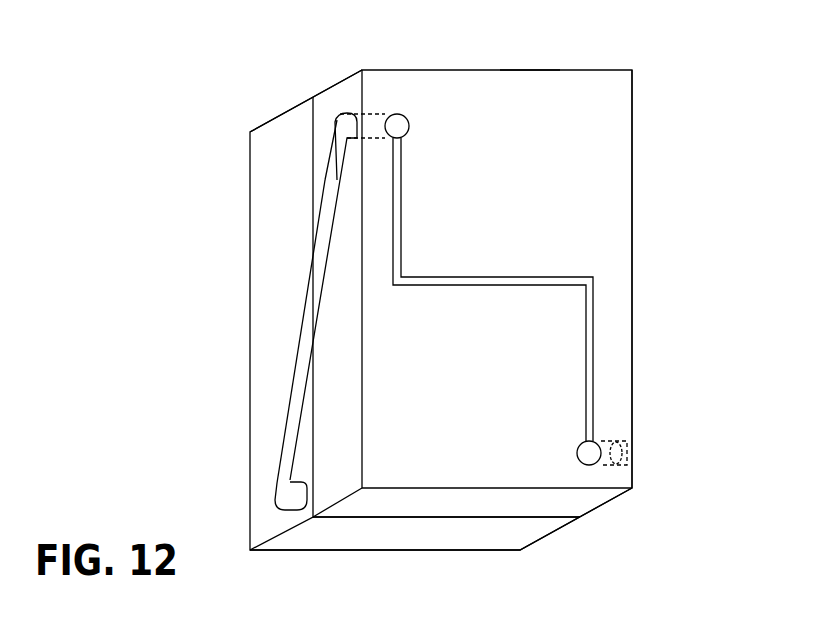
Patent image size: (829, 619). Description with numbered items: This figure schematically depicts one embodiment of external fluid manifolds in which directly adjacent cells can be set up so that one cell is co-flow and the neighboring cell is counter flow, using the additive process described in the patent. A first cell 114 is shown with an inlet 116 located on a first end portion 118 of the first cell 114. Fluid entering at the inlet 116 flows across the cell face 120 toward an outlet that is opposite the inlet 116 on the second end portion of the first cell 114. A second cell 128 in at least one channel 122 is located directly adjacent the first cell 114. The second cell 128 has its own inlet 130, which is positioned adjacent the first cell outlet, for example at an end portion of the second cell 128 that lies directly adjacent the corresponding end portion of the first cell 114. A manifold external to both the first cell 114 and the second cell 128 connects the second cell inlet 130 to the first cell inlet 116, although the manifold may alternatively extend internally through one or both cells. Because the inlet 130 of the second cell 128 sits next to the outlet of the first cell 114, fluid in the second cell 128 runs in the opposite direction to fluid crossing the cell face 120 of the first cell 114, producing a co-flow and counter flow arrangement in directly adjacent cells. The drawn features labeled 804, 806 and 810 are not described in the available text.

The first cell 114 is at (604, 84).
The inlet 116 is at (403, 113).
The first end portion 118 is at (529, 82).
The cell face 120 is at (618, 200).
The channel 122 is at (402, 190).
The second cell 128 is at (527, 531).
The inlet 130 is at (275, 482).
The outlet port 804 is at (577, 453).
The top edge 806 is at (328, 88).
The slanted bar 810 is at (303, 322).